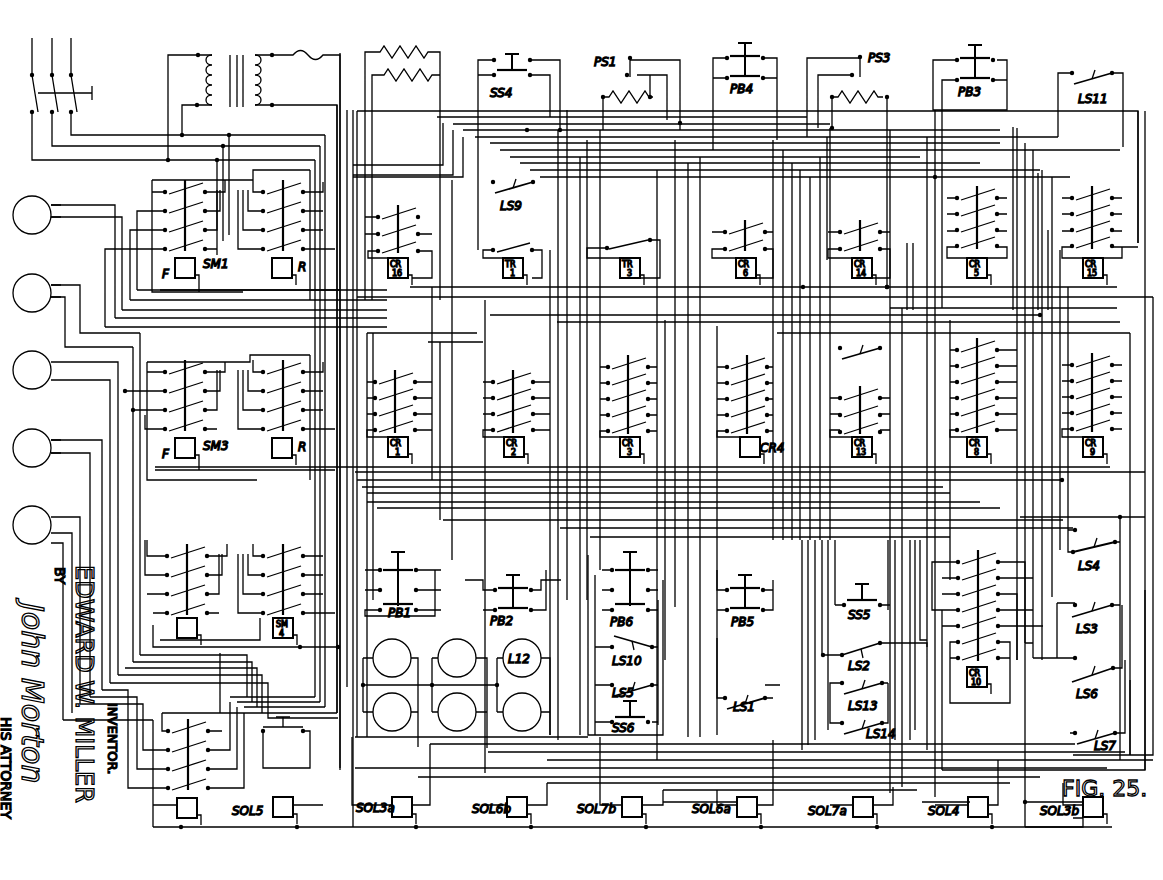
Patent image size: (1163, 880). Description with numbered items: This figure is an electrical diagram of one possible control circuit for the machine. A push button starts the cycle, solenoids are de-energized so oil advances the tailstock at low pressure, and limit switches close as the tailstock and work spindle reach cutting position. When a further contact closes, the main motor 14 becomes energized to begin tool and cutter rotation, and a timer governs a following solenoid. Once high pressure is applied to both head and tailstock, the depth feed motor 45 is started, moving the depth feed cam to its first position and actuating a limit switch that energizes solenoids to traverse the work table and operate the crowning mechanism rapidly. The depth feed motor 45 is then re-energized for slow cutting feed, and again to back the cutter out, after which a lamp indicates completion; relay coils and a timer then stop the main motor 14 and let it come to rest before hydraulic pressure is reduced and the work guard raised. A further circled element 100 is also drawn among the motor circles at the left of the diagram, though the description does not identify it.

The main motor 14 is at (37, 206).
The depth feed motor 45 is at (37, 284).
The indexing motor 100 is at (37, 439).